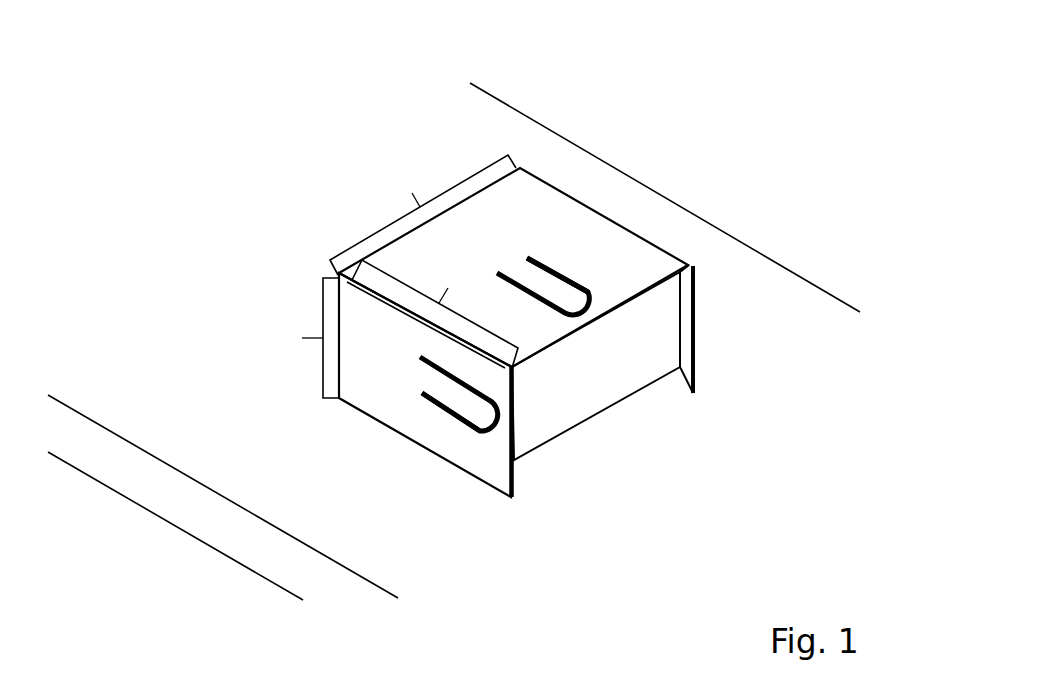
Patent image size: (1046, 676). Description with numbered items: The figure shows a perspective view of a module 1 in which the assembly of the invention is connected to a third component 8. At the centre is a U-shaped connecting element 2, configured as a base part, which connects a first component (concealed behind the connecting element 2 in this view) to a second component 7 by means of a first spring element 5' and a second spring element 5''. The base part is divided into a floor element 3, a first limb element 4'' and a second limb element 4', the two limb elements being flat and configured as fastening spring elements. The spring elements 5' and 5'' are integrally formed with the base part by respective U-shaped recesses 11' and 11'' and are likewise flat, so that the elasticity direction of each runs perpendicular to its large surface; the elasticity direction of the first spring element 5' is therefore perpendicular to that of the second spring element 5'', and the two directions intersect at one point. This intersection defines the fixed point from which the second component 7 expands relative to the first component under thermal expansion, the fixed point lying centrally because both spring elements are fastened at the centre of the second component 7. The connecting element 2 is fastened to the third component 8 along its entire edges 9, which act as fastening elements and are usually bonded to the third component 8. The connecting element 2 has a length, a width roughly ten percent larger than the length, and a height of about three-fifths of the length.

The module 1 is at (503, 343).
The connecting element 2 is at (503, 328).
The floor element 3 is at (508, 213).
The second limb element 4' is at (771, 329).
The first limb element 4'' is at (328, 434).
The first spring element 5' is at (605, 201).
The second spring element 5'' is at (347, 516).
The second component 7 is at (653, 336).
The third component 8 is at (197, 429).
The edges 9 is at (518, 501).
The first U-shaped recess 11' is at (594, 190).
The second U-shaped recess 11'' is at (410, 534).